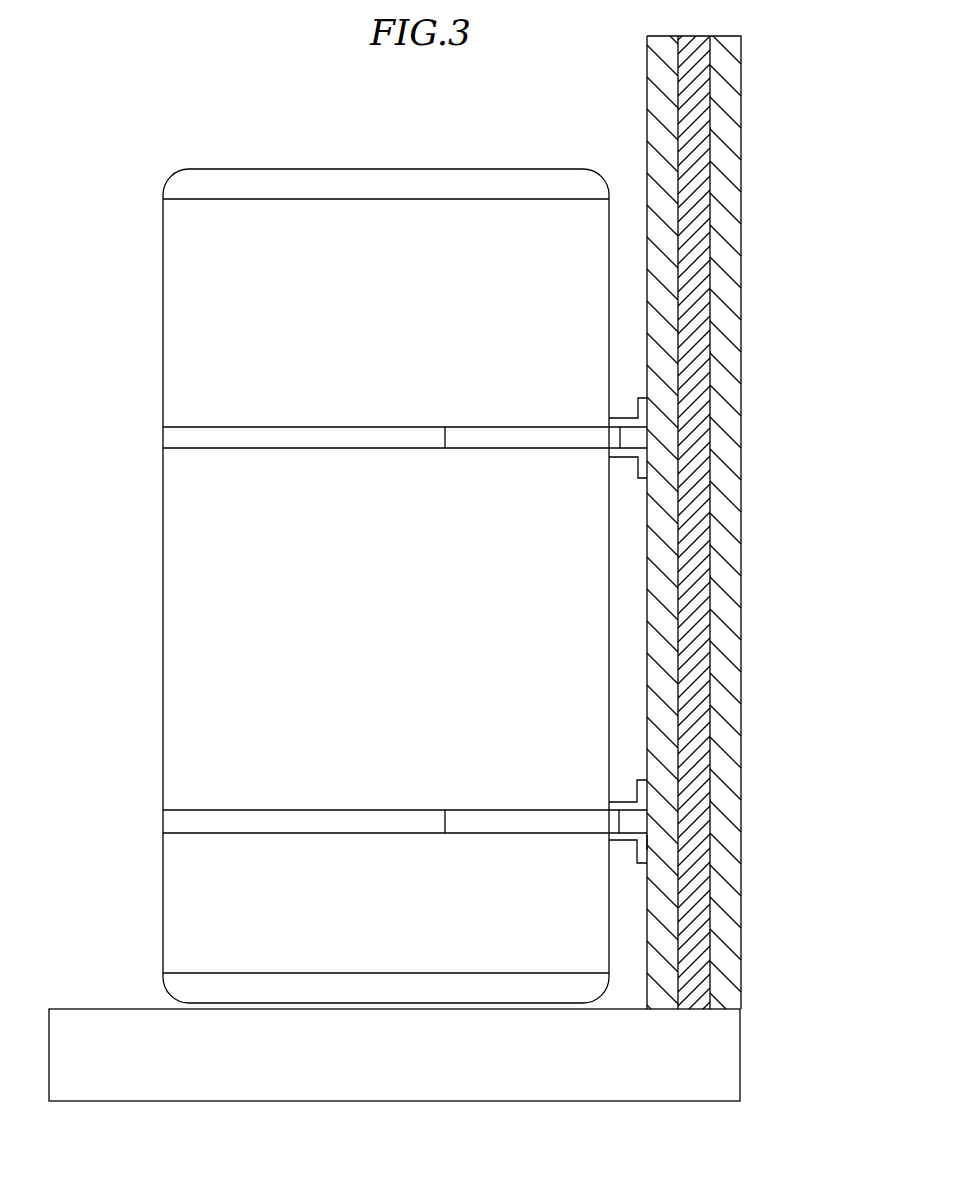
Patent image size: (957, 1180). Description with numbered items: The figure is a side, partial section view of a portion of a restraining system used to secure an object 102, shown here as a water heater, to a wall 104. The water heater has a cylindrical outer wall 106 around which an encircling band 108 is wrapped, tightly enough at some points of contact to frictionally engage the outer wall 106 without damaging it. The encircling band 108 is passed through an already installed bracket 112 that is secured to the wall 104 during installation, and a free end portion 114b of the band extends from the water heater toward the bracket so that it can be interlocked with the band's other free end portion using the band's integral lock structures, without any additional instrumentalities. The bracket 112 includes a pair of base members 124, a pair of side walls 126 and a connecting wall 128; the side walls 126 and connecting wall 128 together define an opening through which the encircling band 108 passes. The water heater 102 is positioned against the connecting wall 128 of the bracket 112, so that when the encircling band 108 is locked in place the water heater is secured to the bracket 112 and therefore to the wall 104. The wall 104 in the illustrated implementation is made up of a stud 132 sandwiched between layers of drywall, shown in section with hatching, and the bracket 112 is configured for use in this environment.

The object 102 is at (138, 608).
The wall 104 is at (723, 875).
The cylindrical outer wall 106 is at (187, 900).
The encircling band 108 is at (255, 399).
The bracket 112 is at (668, 834).
The free end portion 114b is at (410, 438).
The base member 124 is at (637, 856).
The side wall 126 is at (622, 797).
The connecting wall 128 is at (603, 838).
The stud 132 is at (703, 83).